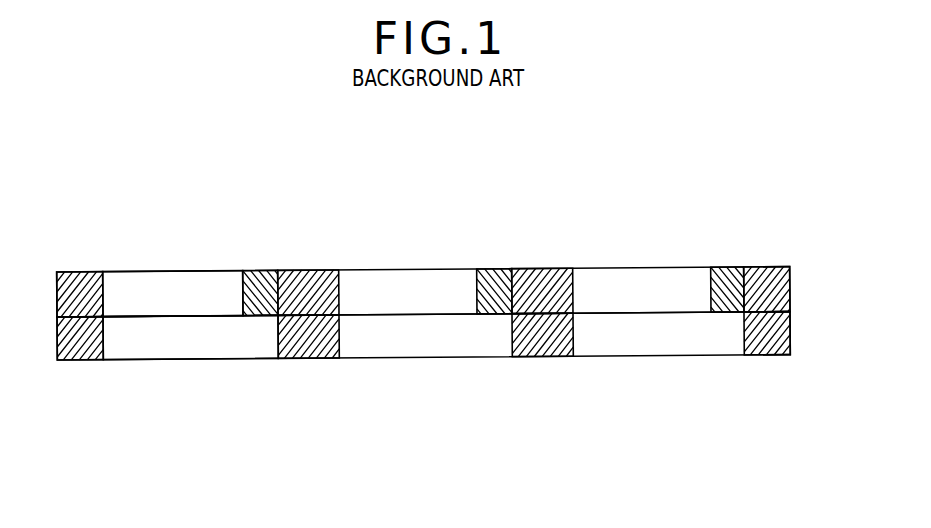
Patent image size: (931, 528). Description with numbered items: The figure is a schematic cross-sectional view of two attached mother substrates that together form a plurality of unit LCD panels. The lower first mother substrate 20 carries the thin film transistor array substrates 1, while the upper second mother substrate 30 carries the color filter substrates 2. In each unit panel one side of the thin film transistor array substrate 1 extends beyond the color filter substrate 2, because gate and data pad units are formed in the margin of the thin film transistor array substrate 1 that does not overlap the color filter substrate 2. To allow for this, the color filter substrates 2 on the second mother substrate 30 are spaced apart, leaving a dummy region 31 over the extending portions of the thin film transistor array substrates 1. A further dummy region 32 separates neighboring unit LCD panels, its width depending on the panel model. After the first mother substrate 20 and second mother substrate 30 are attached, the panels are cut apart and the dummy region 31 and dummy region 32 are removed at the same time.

The thin film transistor array substrate 1 is at (188, 343).
The color filter substrate 2 is at (186, 289).
The first mother substrate 20 is at (800, 311).
The second mother substrate 30 is at (800, 268).
The dummy region 31 is at (262, 283).
The dummy region 32 is at (80, 284).